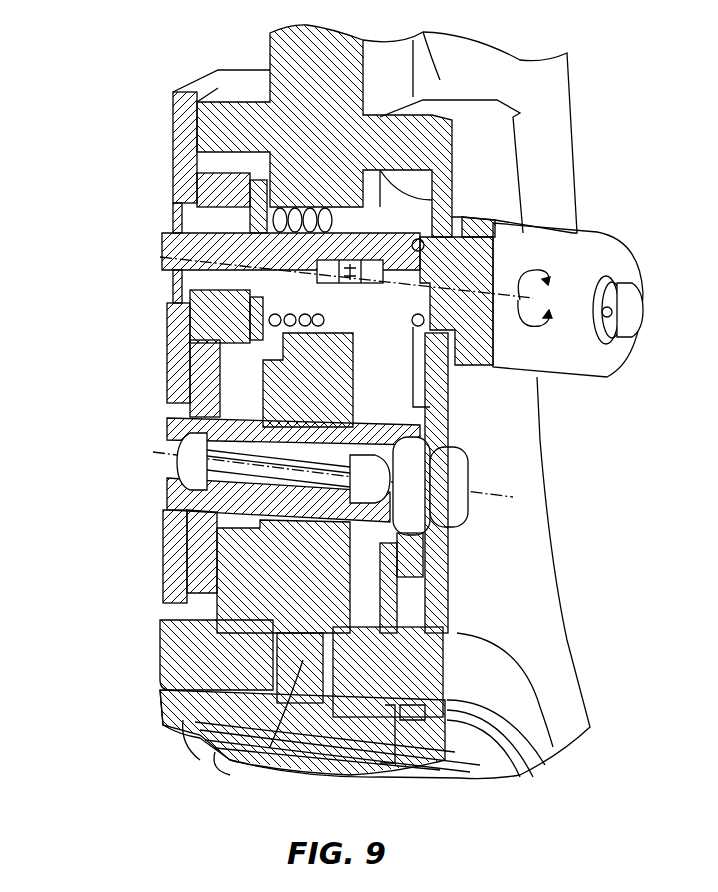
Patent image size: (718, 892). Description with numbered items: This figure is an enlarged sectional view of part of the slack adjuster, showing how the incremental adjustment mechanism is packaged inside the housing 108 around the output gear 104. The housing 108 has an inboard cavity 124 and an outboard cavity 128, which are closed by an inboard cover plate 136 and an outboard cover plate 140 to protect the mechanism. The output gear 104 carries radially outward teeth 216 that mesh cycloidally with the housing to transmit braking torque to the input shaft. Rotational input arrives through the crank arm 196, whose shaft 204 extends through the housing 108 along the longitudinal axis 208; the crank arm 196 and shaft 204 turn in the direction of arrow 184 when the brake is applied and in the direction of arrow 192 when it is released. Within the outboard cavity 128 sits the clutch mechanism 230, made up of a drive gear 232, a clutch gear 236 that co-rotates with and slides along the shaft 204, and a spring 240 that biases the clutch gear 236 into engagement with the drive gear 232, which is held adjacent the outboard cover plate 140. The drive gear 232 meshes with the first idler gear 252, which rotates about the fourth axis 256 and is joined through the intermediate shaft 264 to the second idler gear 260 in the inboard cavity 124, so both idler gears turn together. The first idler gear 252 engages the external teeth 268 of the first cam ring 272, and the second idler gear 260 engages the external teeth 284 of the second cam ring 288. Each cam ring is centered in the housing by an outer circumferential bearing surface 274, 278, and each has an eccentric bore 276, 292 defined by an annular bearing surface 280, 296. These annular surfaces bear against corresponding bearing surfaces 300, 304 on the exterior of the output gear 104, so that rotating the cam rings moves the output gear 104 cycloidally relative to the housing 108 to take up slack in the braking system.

The output gear 104 is at (215, 752).
The housing 108 is at (447, 98).
The inboard cavity 124 is at (437, 192).
The outboard cavity 128 is at (230, 160).
The inboard cover plate 136 is at (513, 473).
The outboard cover plate 140 is at (175, 110).
The arrow 184 is at (540, 330).
The arrow 192 is at (547, 268).
The crank arm 196 is at (625, 258).
The shaft 204 is at (167, 248).
The longitudinal axis 208 is at (480, 368).
The teeth 216 is at (270, 747).
The clutch mechanism 230 is at (160, 220).
The drive gear 232 is at (193, 330).
The clutch gear 236 is at (225, 185).
The spring 240 is at (372, 148).
The first idler gear 252 is at (170, 377).
The fourth axis 256 is at (483, 497).
The second idler gear 260 is at (460, 420).
The intermediate shaft 264 is at (170, 417).
The external teeth 268 is at (187, 575).
The first cam ring 272 is at (167, 632).
The outer circumferential bearing surface 274 is at (227, 578).
The bore 276 is at (175, 705).
The outer circumferential bearing surface 278 is at (447, 577).
The annular bearing surface 280 is at (213, 747).
The external teeth 284 is at (440, 620).
The second cam ring 288 is at (507, 692).
The bore 292 is at (440, 773).
The annular bearing surface 296 is at (363, 763).
The bearing surface 300 is at (197, 718).
The bearing surface 304 is at (407, 710).